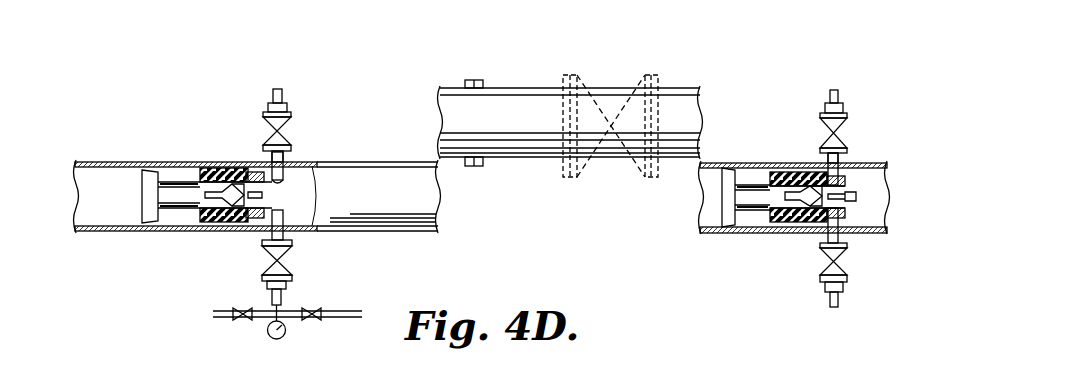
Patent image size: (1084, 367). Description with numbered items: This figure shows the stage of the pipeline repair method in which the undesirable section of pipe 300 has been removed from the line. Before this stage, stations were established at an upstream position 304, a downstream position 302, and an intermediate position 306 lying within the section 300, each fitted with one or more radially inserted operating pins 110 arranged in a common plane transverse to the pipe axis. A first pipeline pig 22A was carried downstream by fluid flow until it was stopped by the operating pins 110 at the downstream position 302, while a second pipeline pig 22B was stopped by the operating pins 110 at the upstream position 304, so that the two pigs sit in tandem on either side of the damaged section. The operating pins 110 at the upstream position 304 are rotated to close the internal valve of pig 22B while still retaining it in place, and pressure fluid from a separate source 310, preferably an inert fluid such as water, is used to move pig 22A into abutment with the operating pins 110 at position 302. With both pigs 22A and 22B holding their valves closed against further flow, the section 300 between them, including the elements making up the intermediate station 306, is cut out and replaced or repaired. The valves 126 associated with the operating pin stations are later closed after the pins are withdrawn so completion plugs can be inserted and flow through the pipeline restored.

The upstream position 304 is at (481, 214).
The intermediate position 306 is at (535, 125).
The section of pipeline to be removed or repaired 300 is at (534, 177).
The downstream position 302 is at (794, 182).
The valve 126 is at (283, 141).
The operating pin 110 is at (285, 214).
The second pipeline pig 22B is at (176, 220).
The first pipeline pig 22A is at (750, 223).
The pressure fluid source 310 is at (262, 318).